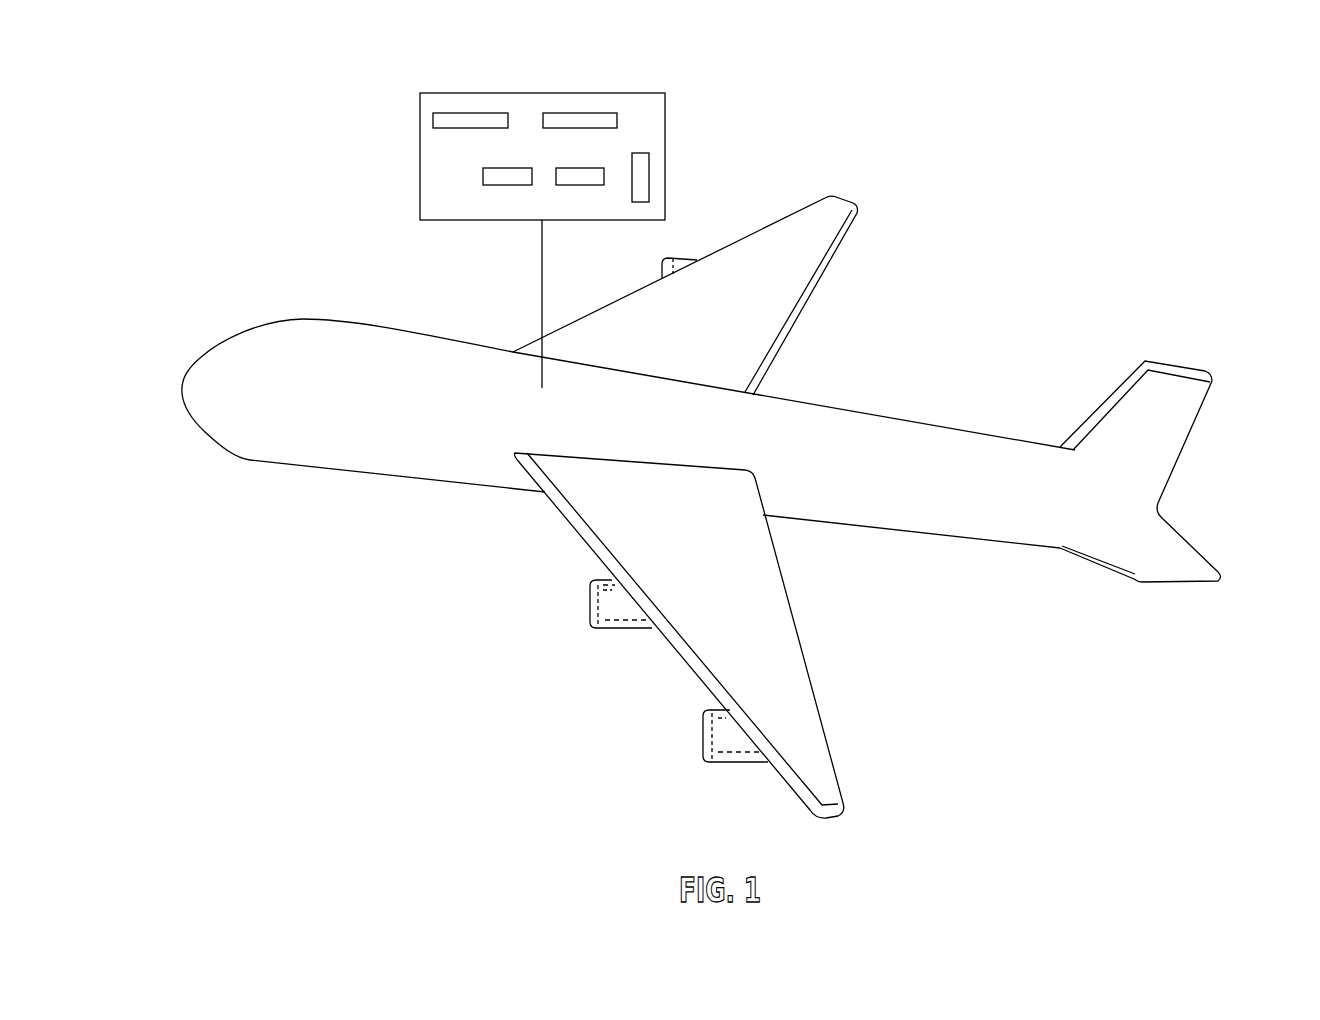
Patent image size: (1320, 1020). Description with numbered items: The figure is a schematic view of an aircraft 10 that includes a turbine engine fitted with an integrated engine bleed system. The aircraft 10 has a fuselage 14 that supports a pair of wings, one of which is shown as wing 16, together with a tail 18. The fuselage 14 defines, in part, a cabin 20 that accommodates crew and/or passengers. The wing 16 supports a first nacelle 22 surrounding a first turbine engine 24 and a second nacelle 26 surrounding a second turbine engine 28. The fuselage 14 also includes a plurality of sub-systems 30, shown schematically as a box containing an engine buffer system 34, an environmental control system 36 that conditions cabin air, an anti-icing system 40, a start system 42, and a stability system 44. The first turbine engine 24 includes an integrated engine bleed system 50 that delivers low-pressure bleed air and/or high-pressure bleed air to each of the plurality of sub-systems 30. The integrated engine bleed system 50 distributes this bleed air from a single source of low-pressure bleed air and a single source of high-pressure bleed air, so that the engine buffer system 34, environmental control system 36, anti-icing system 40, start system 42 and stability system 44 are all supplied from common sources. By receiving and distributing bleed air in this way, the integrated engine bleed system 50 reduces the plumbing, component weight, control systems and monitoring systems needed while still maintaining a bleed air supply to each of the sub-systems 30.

The aircraft 10 is at (324, 228).
The fuselage 14 is at (283, 447).
The wing 16 is at (802, 698).
The tail 18 is at (1130, 556).
The cabin 20 is at (465, 372).
The first nacelle 22 is at (594, 571).
The first turbine engine 24 is at (622, 628).
The second nacelle 26 is at (718, 778).
The second turbine engine 28 is at (714, 735).
The plurality of sub-systems 30 is at (366, 86).
The engine buffer system 34 is at (472, 112).
The environmental control system 36 is at (580, 112).
The anti-icing system 40 is at (483, 177).
The start system 42 is at (593, 185).
The stability system 44 is at (649, 177).
The integrated engine bleed system 50 is at (607, 603).